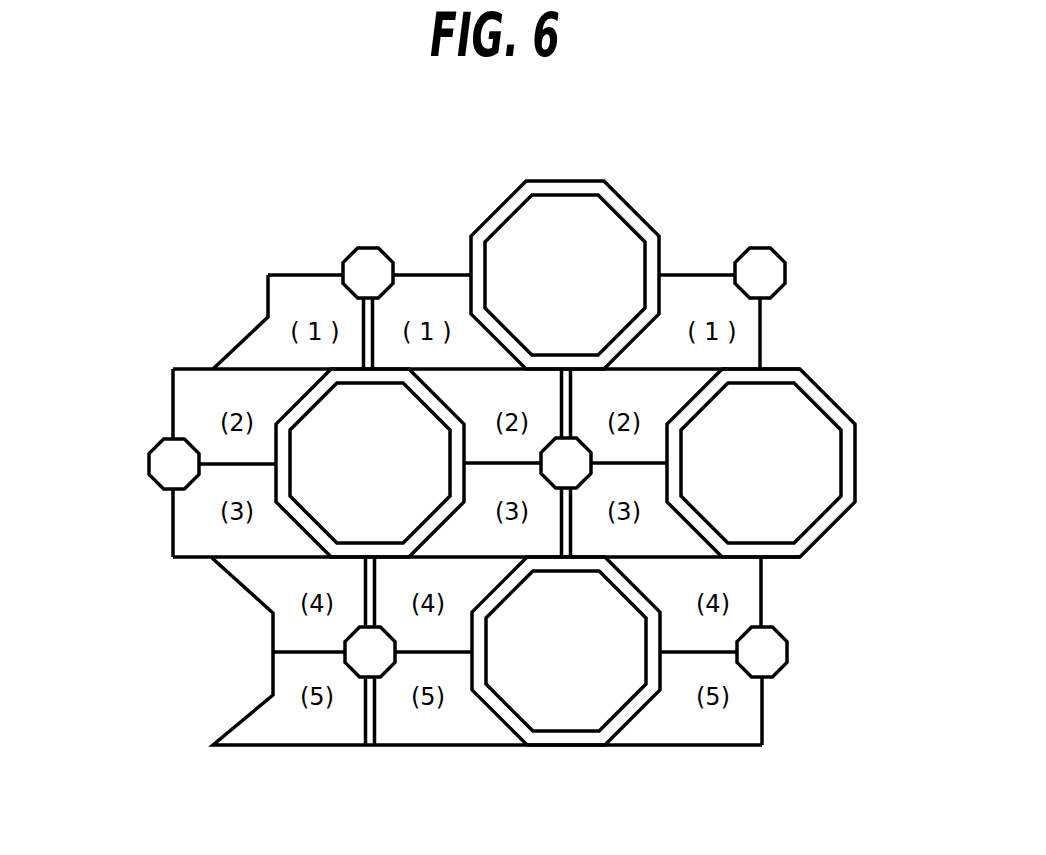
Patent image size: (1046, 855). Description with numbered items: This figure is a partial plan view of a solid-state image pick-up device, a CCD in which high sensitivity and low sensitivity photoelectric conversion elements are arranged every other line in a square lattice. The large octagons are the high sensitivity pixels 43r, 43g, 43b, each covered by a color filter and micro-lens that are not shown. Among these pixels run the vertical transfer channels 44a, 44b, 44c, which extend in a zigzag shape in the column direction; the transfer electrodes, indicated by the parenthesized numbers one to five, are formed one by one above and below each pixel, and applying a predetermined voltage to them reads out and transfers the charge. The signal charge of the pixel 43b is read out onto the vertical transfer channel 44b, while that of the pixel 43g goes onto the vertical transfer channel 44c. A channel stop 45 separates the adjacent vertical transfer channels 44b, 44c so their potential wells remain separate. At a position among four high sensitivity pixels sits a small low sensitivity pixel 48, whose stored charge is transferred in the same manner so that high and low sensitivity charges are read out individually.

The pixel 43b is at (325, 422).
The pixel 43g is at (622, 230).
The pixel 43r is at (823, 452).
The vertical transfer channel 44a is at (303, 297).
The vertical transfer channel 44b is at (408, 720).
The vertical transfer channel 44c is at (732, 716).
The channel stop 45 is at (572, 390).
The low sensitivity pixel 48 is at (368, 247).